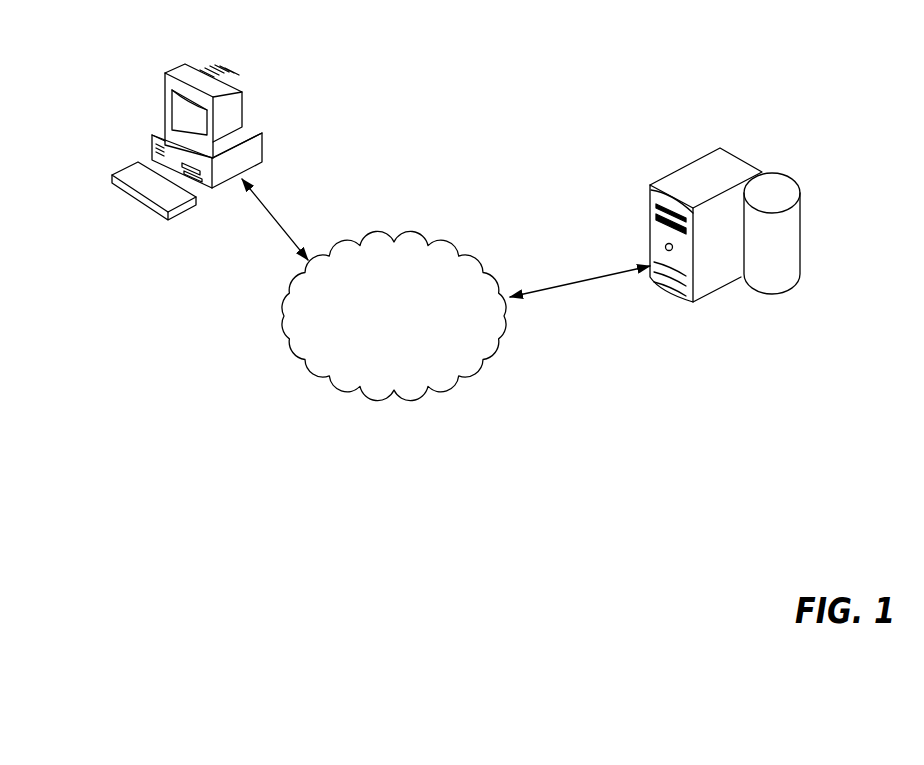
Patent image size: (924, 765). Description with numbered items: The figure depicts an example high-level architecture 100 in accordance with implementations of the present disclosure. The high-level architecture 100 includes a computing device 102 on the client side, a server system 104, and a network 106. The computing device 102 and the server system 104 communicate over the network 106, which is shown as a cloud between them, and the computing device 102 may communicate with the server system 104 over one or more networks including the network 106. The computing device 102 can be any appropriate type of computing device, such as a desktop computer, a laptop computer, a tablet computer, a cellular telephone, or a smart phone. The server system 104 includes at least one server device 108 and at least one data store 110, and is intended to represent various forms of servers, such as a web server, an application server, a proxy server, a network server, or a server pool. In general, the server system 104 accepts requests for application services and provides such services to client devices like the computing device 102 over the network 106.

The high-level architecture 100 is at (508, 90).
The computing device 102 is at (168, 73).
The server system 104 is at (815, 138).
The network 106 is at (300, 354).
The server device 108 is at (650, 240).
The data store 110 is at (801, 225).